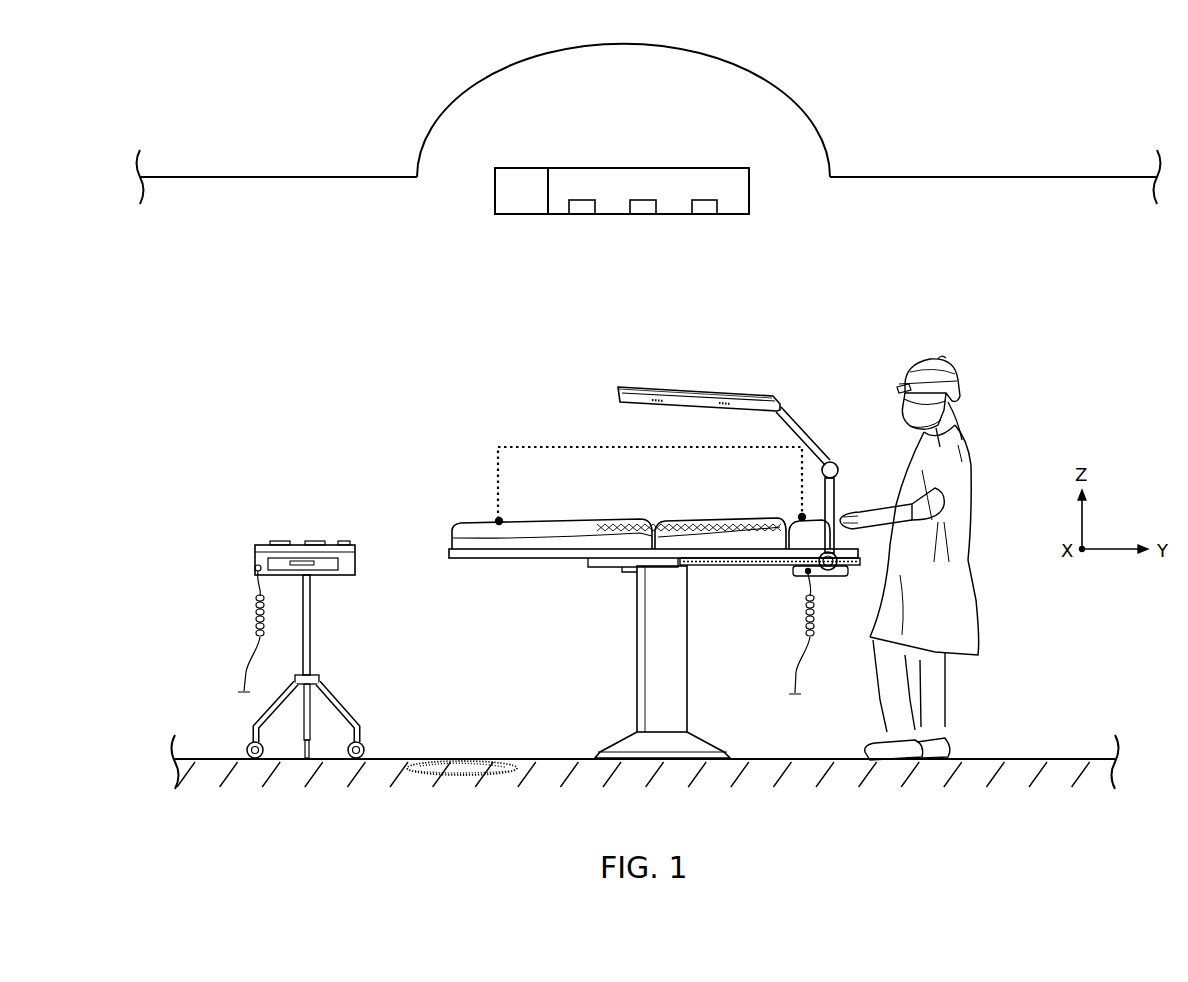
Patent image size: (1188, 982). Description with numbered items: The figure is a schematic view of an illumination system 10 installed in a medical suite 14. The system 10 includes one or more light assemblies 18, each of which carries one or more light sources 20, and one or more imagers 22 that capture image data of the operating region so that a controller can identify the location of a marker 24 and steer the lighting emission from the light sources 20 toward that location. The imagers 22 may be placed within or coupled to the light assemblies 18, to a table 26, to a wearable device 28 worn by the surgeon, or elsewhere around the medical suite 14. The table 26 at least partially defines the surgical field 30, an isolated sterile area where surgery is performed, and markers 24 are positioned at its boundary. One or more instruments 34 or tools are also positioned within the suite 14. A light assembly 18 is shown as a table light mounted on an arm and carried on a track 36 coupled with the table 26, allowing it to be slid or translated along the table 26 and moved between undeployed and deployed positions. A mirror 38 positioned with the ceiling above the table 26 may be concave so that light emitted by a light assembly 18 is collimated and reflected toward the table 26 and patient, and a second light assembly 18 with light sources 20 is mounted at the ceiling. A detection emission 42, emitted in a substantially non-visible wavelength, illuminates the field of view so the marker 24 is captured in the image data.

The illumination system 10 is at (862, 290).
The medical suite 14 is at (369, 343).
The light assembly 18 is at (630, 198).
The light source 20 is at (582, 214).
The imager 22 is at (534, 198).
The marker 24 is at (496, 519).
The table 26 is at (450, 523).
The wearable device 28 is at (963, 381).
The surgical field 30 is at (538, 447).
The instrument 34 is at (280, 541).
The track 36 is at (768, 567).
The mirror 38 is at (753, 80).
The detection emission 42 is at (460, 756).